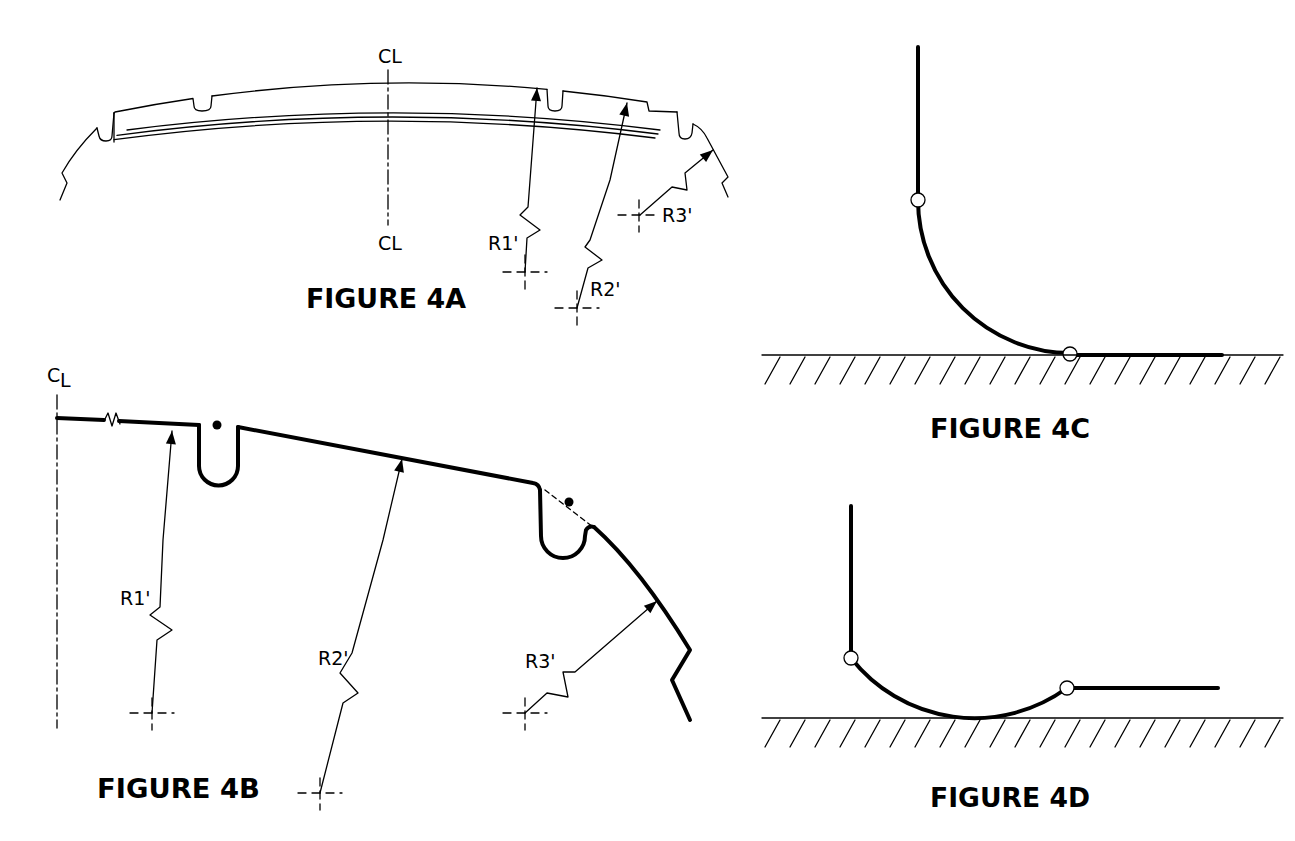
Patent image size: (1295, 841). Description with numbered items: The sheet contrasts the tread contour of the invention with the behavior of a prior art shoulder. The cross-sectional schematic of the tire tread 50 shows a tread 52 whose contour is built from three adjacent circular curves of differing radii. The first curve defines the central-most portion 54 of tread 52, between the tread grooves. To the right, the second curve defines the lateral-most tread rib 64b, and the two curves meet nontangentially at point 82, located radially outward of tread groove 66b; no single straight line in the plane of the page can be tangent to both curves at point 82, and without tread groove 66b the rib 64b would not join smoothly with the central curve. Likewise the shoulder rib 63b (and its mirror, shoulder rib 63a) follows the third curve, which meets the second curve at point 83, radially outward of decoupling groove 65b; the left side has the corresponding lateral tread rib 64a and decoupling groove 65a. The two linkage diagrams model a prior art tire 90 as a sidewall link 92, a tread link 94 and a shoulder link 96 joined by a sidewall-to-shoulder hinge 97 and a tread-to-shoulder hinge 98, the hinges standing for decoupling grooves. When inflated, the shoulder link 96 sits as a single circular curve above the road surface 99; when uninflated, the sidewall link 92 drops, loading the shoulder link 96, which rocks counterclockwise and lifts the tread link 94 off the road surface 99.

In FIG. 4A, the frame member 50 is at (297, 80).
In FIG. 4B, the frame member 50 is at (125, 380).
In FIG. 4A, the tread 52 is at (485, 80).
In FIG. 4B, the tread 52 is at (140, 420).
In FIG. 4A, the central-most portion of tread 54 is at (335, 97).
In FIG. 4B, the central-most portion of tread 54 is at (88, 443).
In FIG. 4A, the shoulder rib 63a is at (65, 143).
In FIG. 4A, the shoulder rib 63b is at (713, 148).
In FIG. 4B, the shoulder rib 63b is at (607, 570).
In FIG. 4A, the lateral-most tread rib 64a is at (143, 103).
In FIG. 4A, the lateral-most tread rib 64b is at (646, 100).
In FIG. 4B, the lateral-most tread rib 64b is at (263, 450).
In FIG. 4A, the decoupling groove 65a is at (108, 128).
In FIG. 4A, the decoupling groove 65b is at (681, 125).
In FIG. 4B, the decoupling groove 65b is at (557, 525).
In FIG. 4A, the tread groove 66b is at (553, 93).
In FIG. 4B, the tread groove 66b is at (226, 447).
In FIG. 4B, the point 82 is at (216, 420).
In FIG. 4B, the point 83 is at (577, 502).
In FIG. 4C, the tire 90 is at (897, 126).
In FIG. 4D, the tire 90 is at (833, 598).
In FIG. 4C, the sidewall link 92 is at (920, 128).
In FIG. 4D, the sidewall link 92 is at (853, 555).
In FIG. 4C, the tread link 94 is at (1170, 353).
In FIG. 4D, the tread link 94 is at (1163, 685).
In FIG. 4C, the shoulder link 96 is at (958, 300).
In FIG. 4D, the shoulder link 96 is at (917, 703).
In FIG. 4C, the sidewall-to-shoulder hinge 97 is at (923, 193).
In FIG. 4D, the sidewall-to-shoulder hinge 97 is at (857, 657).
In FIG. 4C, the tread-to-shoulder hinge 98 is at (1076, 348).
In FIG. 4D, the tread-to-shoulder hinge 98 is at (1066, 683).
In FIG. 4C, the road surface 99 is at (1167, 362).
In FIG. 4D, the road surface 99 is at (1205, 723).